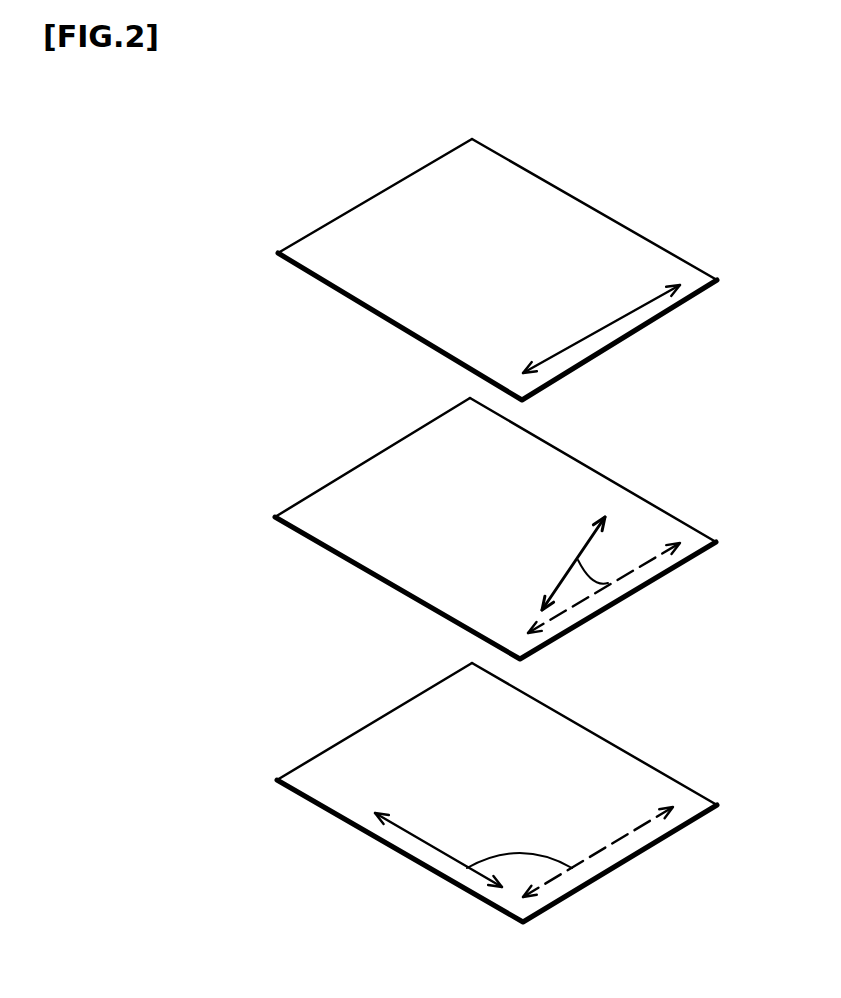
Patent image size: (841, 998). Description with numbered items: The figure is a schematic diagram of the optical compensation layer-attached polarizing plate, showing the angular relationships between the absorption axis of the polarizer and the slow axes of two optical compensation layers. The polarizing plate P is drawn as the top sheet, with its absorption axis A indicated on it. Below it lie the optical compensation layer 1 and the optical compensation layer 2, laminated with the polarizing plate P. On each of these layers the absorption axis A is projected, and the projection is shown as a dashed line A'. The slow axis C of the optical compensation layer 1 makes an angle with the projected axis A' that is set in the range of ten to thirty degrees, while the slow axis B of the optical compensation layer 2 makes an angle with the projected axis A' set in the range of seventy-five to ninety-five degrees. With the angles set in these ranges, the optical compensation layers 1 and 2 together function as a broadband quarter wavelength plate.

The polarizing plate P is at (635, 253).
The absorption axis of polarizing plate A is at (601, 337).
The optical compensation layer 1 is at (382, 563).
The slow axis of optical compensation layer (1) C is at (572, 577).
The projection of absorption axis A' is at (606, 732).
The optical compensation layer 2 is at (335, 793).
The slow axis of optical compensation layer (2) B is at (447, 860).